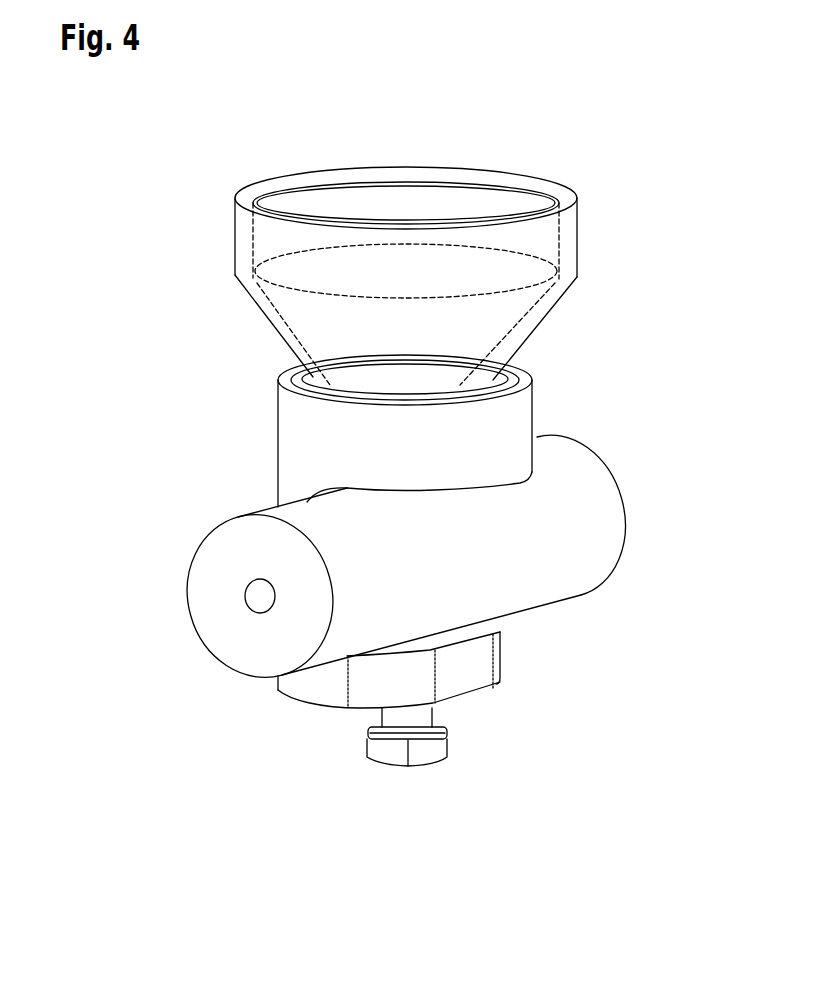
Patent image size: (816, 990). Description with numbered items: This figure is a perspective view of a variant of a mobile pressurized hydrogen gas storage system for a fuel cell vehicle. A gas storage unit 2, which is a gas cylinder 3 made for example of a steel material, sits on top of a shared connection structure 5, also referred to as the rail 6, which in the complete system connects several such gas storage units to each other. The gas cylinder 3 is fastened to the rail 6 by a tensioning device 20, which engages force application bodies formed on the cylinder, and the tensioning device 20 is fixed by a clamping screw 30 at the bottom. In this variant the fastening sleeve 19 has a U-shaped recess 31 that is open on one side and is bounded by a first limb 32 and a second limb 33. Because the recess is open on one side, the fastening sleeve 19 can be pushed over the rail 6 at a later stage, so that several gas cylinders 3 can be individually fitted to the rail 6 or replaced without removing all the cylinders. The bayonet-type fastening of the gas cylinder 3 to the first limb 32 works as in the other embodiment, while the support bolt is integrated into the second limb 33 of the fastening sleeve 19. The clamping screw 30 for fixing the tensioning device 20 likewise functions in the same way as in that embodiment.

The gas storage unit 2 is at (605, 202).
The gas cylinder 3 is at (568, 256).
The shared connection structure 5 is at (600, 464).
The rail 6 is at (230, 543).
The fastening sleeve 19 is at (293, 458).
The tensioning device 20 is at (258, 413).
The clamping screw 30 is at (418, 750).
The U-shaped recess 31 is at (488, 621).
The first limb 32 is at (512, 410).
The second limb 33 is at (477, 663).